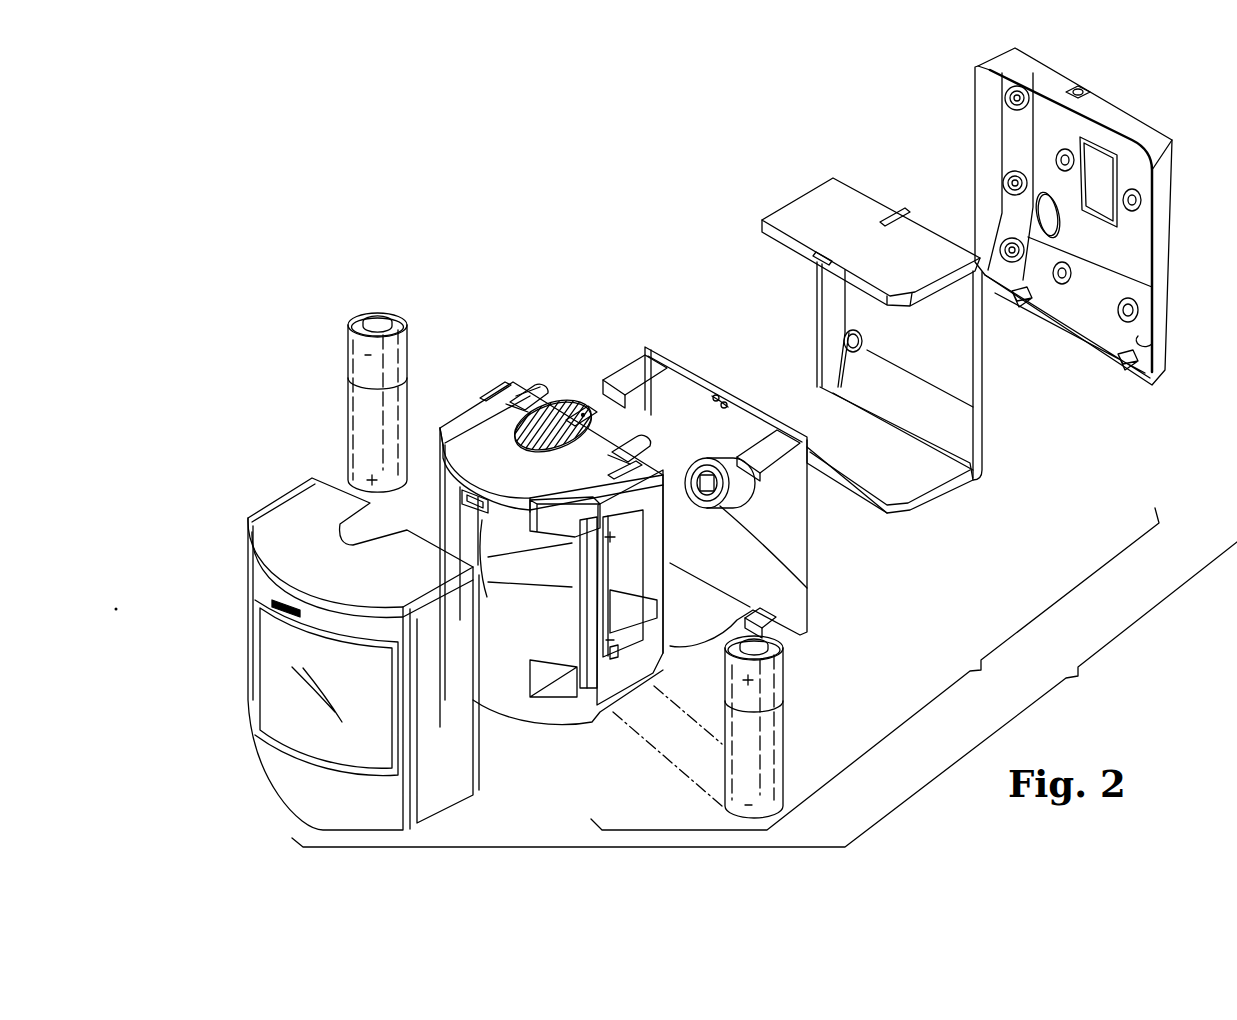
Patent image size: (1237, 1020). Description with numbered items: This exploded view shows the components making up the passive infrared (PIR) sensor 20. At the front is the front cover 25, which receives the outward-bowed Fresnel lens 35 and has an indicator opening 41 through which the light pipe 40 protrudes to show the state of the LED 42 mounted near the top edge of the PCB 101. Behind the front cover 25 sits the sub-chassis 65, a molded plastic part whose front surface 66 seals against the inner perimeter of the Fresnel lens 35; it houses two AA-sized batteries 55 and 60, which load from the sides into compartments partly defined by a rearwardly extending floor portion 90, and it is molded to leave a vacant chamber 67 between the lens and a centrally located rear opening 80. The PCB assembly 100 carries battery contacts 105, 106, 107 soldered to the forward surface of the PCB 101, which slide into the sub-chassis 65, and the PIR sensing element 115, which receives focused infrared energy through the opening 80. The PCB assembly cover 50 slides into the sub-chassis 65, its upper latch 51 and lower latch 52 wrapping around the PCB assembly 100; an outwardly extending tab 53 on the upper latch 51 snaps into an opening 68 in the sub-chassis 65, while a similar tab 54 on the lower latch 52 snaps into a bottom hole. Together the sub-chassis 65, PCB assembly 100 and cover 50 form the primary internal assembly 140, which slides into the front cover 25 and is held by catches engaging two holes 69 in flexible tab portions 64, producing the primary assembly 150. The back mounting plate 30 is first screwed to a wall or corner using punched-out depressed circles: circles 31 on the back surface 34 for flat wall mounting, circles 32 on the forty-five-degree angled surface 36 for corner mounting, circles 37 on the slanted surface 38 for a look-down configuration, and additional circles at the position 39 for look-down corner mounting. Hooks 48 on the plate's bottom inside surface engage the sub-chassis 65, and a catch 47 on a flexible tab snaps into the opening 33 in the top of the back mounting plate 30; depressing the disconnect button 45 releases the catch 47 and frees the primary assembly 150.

The passive infrared (PIR) sensor 20 is at (508, 320).
The front cover 25 is at (336, 654).
The back mounting plate 30 is at (1074, 230).
The depressed circles 31 is at (1072, 170).
The depressed circles 32 is at (1004, 100).
The opening 33 is at (1083, 91).
The back surface 34 is at (1138, 176).
The Fresnel lens 35 is at (273, 717).
The angled surface 36 is at (992, 83).
The depressed circles 37 is at (1140, 310).
The slanted surface 38 is at (1092, 315).
The position of additional circles 39 is at (1153, 346).
The light pipe 40 is at (482, 508).
The indicator opening 41 is at (276, 598).
The LED 42 is at (719, 396).
The disconnect button 45 is at (563, 412).
The catch 47 is at (586, 408).
The hooks 48 is at (1123, 369).
The PCB assembly cover 50 is at (891, 352).
The upper latch 51 is at (805, 213).
The lower latch 52 is at (900, 492).
The outwardly extending tab 53 is at (832, 258).
The outwardly extending tab 54 is at (824, 488).
The AA-sized battery 55 is at (757, 724).
The AA-sized battery 60 is at (352, 399).
The flexible tab portions 64 is at (541, 385).
The sub-chassis 65 is at (474, 404).
The front surface 66 is at (557, 544).
The vacant chamber 67 is at (557, 640).
The opening 68 is at (443, 443).
The holes 69 is at (492, 389).
The opening 80 is at (575, 542).
The floor portion 90 is at (615, 690).
The PCB assembly 100 is at (781, 511).
The PCB 101 is at (773, 562).
The battery contact 105 is at (759, 450).
The battery contact 106 is at (776, 636).
The battery contact 107 is at (623, 368).
The PIR sensing element 115 is at (724, 508).
The primary internal assembly 140 is at (875, 669).
The primary assembly 150 is at (764, 694).